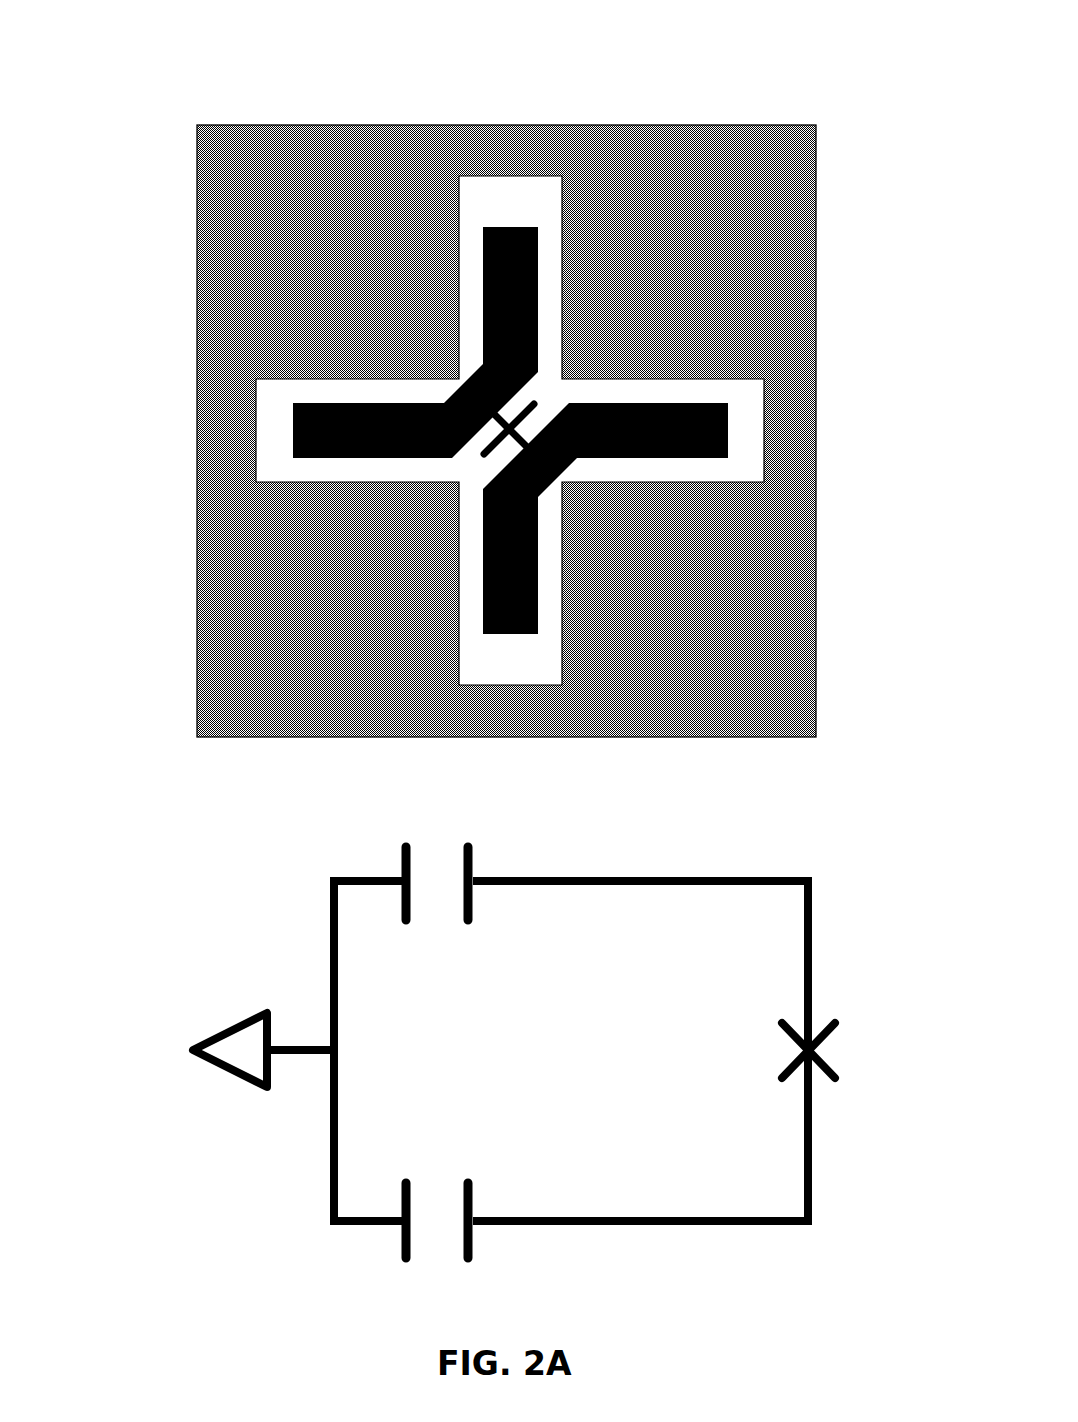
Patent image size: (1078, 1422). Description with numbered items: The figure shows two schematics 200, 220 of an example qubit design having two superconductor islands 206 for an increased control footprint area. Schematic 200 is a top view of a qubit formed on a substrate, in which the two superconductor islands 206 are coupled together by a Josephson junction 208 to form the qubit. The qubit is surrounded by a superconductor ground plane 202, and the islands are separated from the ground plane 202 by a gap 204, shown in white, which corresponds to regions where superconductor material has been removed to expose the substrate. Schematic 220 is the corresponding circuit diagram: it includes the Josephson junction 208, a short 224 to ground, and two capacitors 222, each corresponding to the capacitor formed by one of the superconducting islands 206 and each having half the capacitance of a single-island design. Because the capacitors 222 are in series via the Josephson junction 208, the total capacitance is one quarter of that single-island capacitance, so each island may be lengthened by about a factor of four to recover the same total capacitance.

The schematic 200 is at (431, 371).
The superconductor ground plane 202 is at (671, 124).
The gap 204 is at (508, 175).
The superconductor islands 206 is at (380, 402).
The Josephson junction 208 is at (535, 398).
The schematic 220 is at (433, 1036).
The capacitors 222 is at (433, 907).
The short to ground 224 is at (237, 1030).